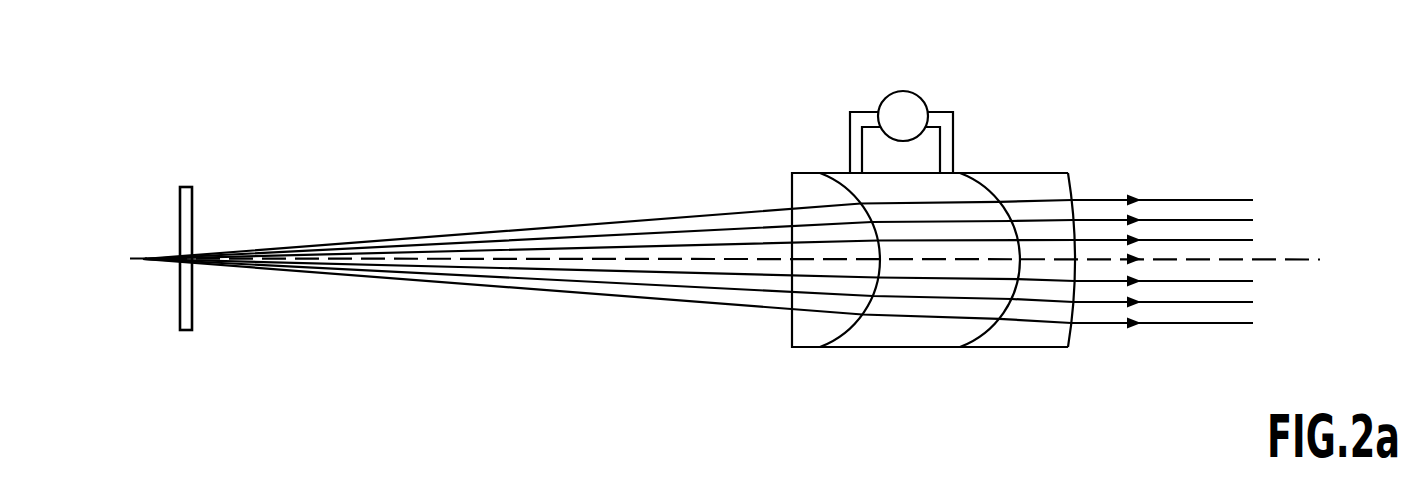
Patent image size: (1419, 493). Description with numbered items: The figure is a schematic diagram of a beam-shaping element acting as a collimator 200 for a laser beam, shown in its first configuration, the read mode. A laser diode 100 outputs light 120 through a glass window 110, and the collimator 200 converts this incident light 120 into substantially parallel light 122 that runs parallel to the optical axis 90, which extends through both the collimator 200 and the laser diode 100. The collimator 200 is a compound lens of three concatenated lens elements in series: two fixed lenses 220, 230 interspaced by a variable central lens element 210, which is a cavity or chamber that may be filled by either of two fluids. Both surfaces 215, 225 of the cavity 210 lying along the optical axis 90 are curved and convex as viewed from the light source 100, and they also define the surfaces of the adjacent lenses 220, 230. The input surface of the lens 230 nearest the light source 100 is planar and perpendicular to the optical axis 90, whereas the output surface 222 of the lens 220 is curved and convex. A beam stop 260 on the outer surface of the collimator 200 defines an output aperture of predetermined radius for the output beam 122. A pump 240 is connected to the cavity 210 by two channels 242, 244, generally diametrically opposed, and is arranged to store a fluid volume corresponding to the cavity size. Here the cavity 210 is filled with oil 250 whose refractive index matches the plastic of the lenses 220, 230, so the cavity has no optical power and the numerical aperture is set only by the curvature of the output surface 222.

The optical axis 90 is at (1278, 262).
The laser diode 100 is at (132, 252).
The glass window 110 is at (192, 205).
The light 120 is at (648, 298).
The parallel light 122 is at (1267, 218).
The collimator 200 is at (1002, 224).
The central lens element 210 is at (910, 333).
The cavity surface 215 is at (1007, 222).
The lens 220 is at (1057, 337).
The output surface 222 is at (1078, 242).
The cavity surface 225 is at (850, 320).
The lens 230 is at (810, 335).
The pump 240 is at (885, 97).
The channel 242 is at (848, 150).
The channel 244 is at (957, 150).
The oil 250 is at (948, 335).
The beam stop 260 is at (1077, 196).